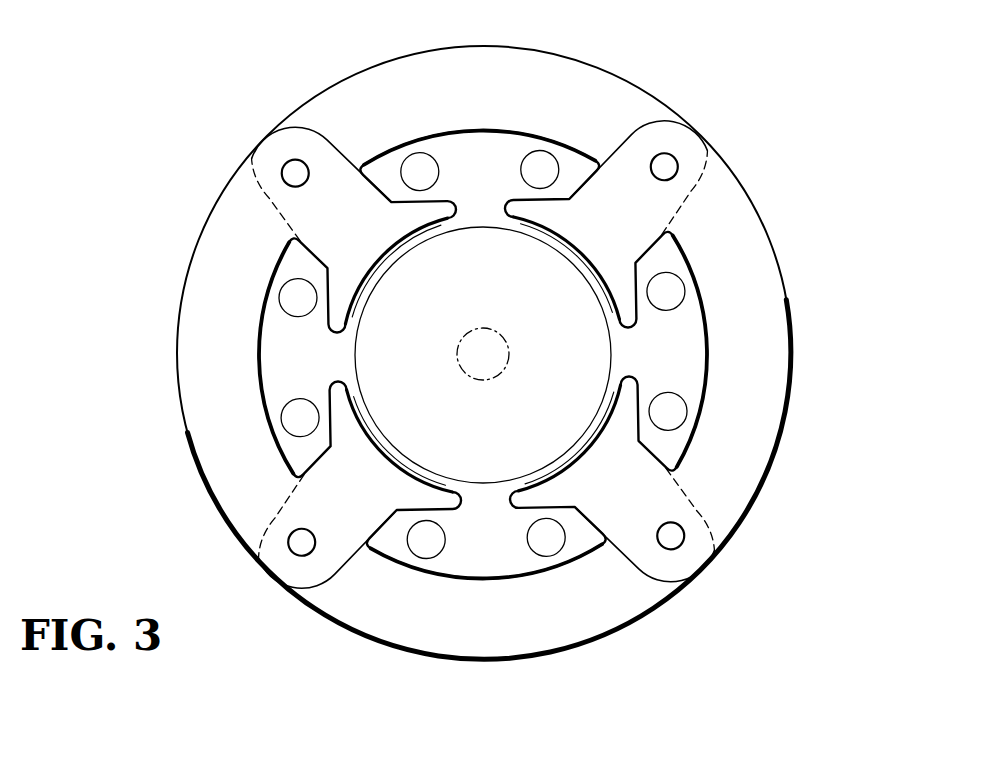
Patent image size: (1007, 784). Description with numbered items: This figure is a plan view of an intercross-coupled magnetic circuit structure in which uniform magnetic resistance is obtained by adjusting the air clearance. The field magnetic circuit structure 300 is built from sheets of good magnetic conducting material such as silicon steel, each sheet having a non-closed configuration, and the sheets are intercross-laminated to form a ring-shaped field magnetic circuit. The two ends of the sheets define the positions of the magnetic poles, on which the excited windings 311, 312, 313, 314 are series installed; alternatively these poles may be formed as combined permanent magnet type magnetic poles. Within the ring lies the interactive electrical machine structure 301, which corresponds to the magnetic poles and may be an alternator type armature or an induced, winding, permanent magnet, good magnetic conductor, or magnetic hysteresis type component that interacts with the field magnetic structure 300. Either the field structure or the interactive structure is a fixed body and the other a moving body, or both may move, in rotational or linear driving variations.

The field magnetic circuit structure 300 is at (602, 93).
The interactive electrical machine structure 301 is at (507, 256).
The excited winding 311 is at (673, 298).
The excited winding 312 is at (540, 547).
The excited winding 313 is at (293, 415).
The excited winding 314 is at (422, 168).